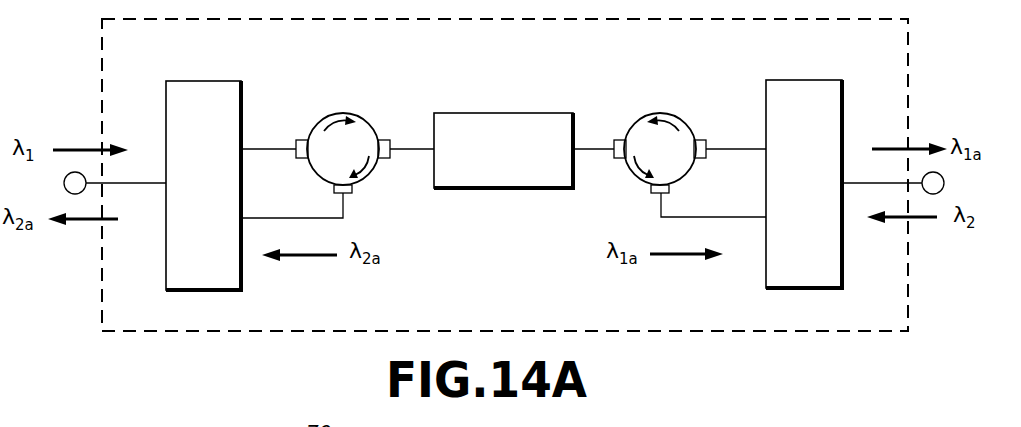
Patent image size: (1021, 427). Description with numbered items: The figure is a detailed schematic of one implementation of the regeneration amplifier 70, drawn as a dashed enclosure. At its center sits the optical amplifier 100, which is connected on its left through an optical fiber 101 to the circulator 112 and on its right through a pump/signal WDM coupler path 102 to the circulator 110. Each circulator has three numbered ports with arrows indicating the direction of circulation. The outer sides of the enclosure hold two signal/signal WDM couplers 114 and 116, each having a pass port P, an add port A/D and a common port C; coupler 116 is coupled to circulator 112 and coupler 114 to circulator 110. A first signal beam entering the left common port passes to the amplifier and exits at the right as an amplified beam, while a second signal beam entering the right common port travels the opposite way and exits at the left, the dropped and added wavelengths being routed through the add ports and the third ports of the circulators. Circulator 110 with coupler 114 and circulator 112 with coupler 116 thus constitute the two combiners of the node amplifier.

The regeneration amplifier 70 is at (295, 0).
The optical amplifier 100 is at (543, 113).
The input/output port 101 is at (413, 149).
The pump/signal WDM coupler 102 is at (600, 149).
The circulator 110 is at (673, 111).
The circulator 112 is at (358, 111).
The signal/signal WDM coupler 114 is at (792, 78).
The signal/signal WDM coupler 116 is at (192, 79).